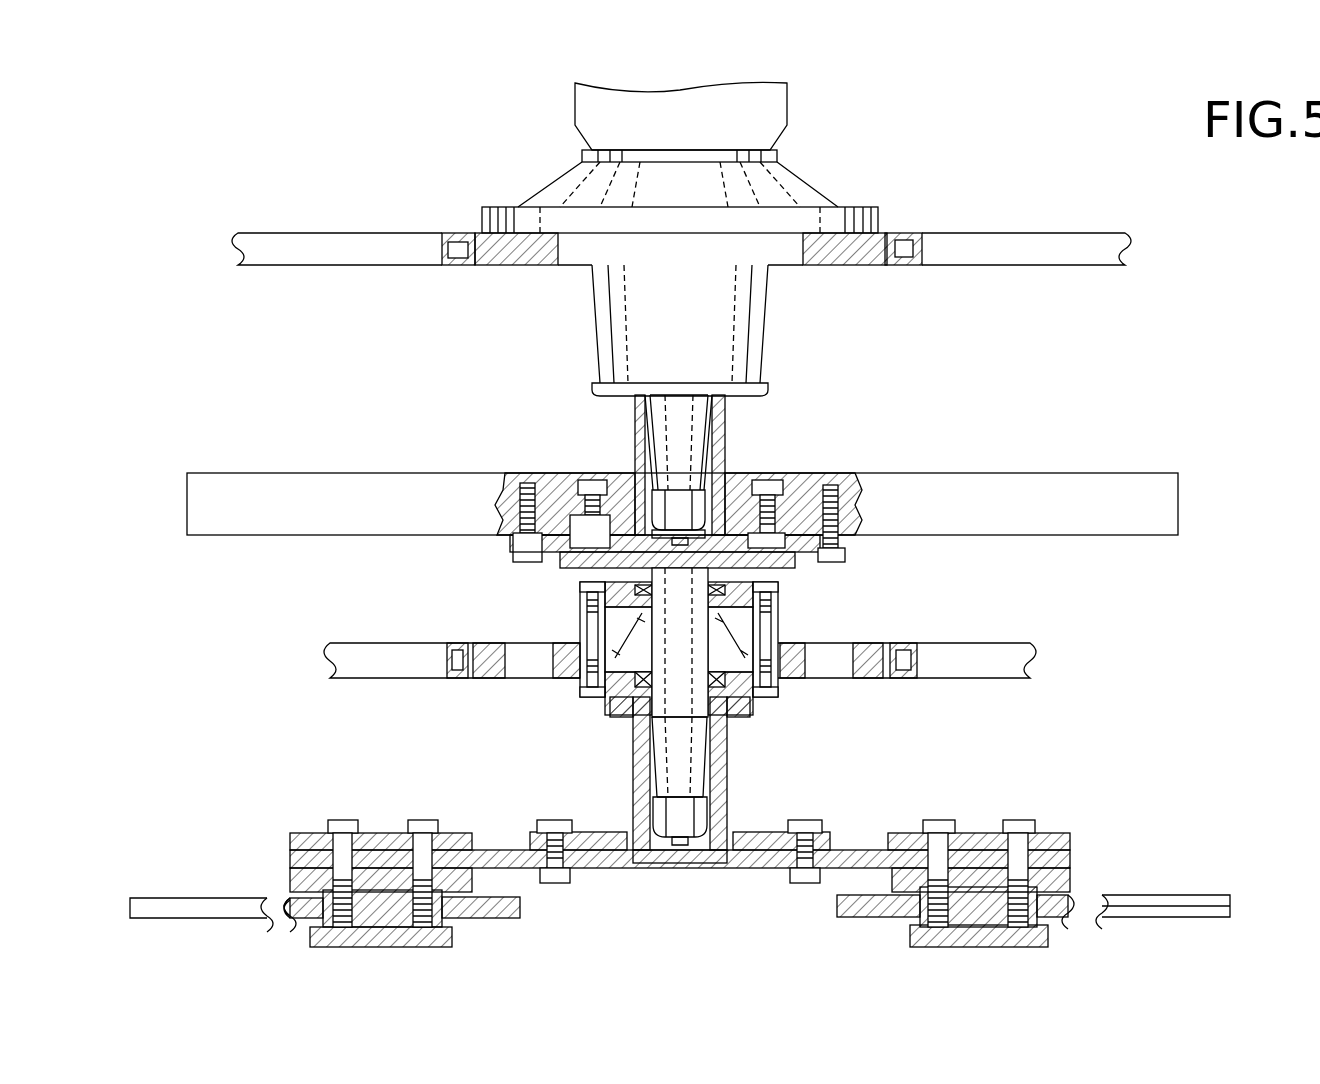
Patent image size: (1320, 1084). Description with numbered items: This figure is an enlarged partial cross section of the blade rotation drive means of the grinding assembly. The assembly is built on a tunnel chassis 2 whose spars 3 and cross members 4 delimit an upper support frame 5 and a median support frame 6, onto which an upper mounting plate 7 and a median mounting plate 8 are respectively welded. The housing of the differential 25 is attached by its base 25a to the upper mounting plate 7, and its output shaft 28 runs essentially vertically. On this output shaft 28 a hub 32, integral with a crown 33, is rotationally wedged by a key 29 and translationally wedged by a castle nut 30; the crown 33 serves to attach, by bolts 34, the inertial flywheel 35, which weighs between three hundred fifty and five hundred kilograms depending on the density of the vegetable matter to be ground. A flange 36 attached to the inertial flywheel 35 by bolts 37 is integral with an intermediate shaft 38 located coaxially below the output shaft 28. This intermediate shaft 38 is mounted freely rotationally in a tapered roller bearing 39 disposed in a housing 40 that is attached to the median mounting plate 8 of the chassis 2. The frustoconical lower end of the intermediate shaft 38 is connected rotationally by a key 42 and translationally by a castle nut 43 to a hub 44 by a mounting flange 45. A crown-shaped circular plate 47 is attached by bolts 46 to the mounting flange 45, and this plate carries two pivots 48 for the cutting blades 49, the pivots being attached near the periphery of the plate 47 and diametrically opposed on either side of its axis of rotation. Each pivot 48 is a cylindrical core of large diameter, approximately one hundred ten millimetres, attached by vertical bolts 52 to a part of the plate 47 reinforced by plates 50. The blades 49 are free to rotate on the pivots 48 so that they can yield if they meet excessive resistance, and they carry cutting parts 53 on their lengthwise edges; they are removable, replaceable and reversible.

The tunnel chassis 2 is at (1085, 218).
The spars 3 is at (438, 233).
The cross members 4 is at (268, 247).
The upper support frame 5 is at (925, 217).
The median support frame 6 is at (447, 627).
The upper mounting plate 7 is at (848, 258).
The median mounting plate 8 is at (870, 643).
The differential 25 is at (778, 103).
The base of differential housing 25a is at (785, 185).
The output shaft 28 is at (692, 420).
The key 29 is at (708, 433).
The castle nut 30 is at (660, 508).
The hub 32 is at (635, 412).
The crown 33 is at (577, 560).
The bolts 34 is at (573, 483).
The inertial flywheel 35 is at (220, 483).
The flange 36 is at (797, 562).
The bolts 37 is at (835, 508).
The intermediate shaft 38 is at (687, 705).
The tapered roller bearing 39 is at (730, 637).
The housing 40 is at (585, 622).
The key 42 is at (712, 758).
The castle nut 43 is at (680, 818).
The hub 44 is at (642, 768).
The mounting flange 45 is at (747, 837).
The bolts 46 is at (815, 825).
The crown-shaped circular plate 47 is at (505, 860).
The pivots 48 is at (918, 933).
The cutting blades 49 is at (1200, 905).
The reinforcing plates 50 is at (1052, 830).
The vertical bolts 52 is at (1018, 820).
The cutting parts 53 is at (1235, 895).